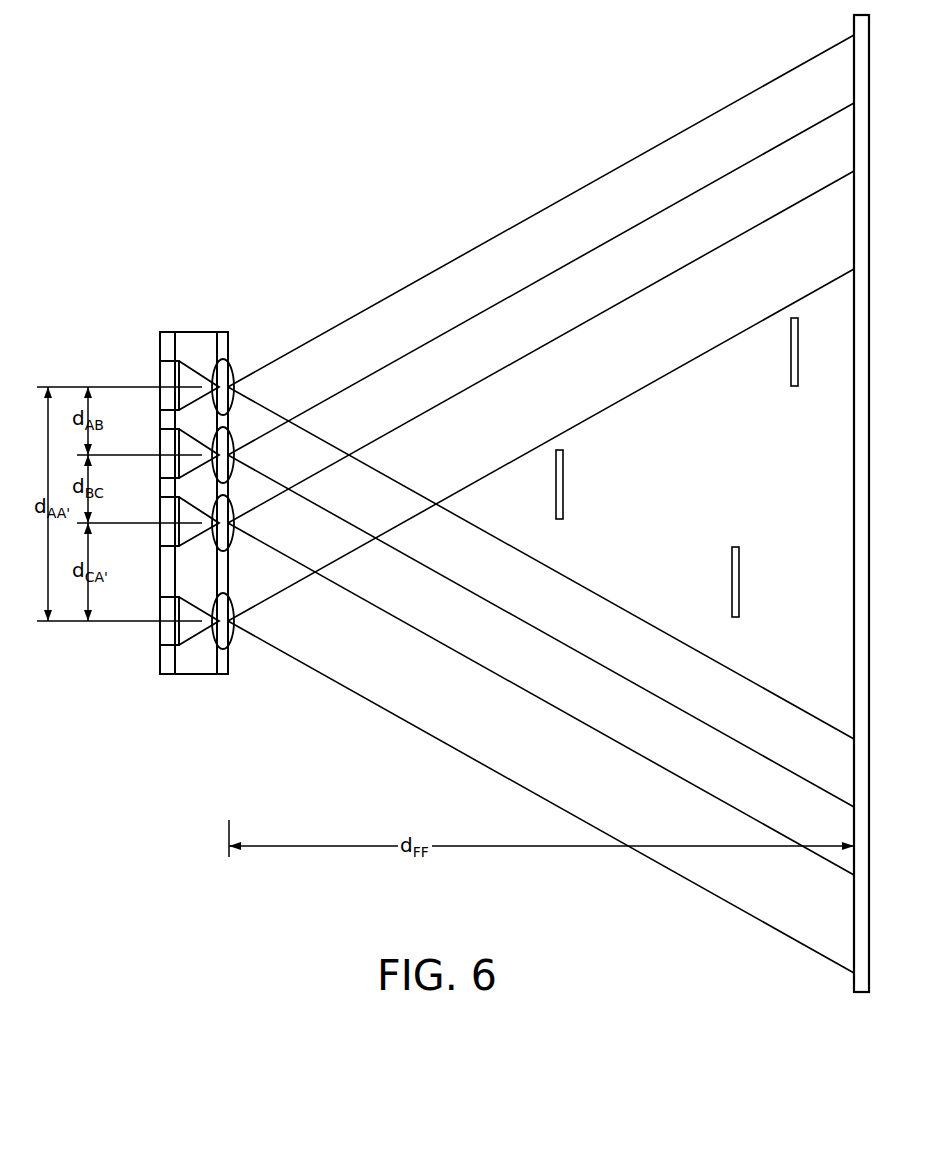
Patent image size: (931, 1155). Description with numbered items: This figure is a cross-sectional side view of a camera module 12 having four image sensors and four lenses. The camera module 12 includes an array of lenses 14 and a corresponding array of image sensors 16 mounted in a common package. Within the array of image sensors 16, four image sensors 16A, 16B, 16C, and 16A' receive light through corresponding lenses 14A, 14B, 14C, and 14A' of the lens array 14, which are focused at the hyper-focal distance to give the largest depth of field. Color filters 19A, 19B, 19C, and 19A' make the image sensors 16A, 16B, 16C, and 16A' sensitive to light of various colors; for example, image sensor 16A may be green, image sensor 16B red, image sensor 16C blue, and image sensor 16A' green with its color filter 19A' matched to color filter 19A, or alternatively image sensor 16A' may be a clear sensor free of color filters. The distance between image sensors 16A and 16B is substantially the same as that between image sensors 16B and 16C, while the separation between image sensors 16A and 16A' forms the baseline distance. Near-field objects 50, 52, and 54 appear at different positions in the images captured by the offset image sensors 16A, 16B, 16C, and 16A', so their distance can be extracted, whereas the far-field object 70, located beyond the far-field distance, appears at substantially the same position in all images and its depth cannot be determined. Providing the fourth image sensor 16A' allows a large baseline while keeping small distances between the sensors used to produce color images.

The camera module 12 is at (193, 322).
The array of lenses 14 is at (222, 688).
The array of image sensors 16 is at (169, 688).
The image sensor 16A is at (163, 383).
The image sensor 16B is at (167, 448).
The image sensor 16C is at (167, 516).
The image sensor 16A' is at (163, 618).
The color filter 19A is at (143, 388).
The color filter 19B is at (177, 463).
The color filter 19C is at (177, 531).
The color filter 19A' is at (143, 624).
The lens 14A is at (533, 387).
The lens 14B is at (236, 468).
The lens 14C is at (236, 535).
The lens 14A' is at (533, 621).
The near-field object 50 is at (564, 483).
The near-field object 52 is at (732, 569).
The near-field object 54 is at (791, 364).
The far-field object 70 is at (854, 481).